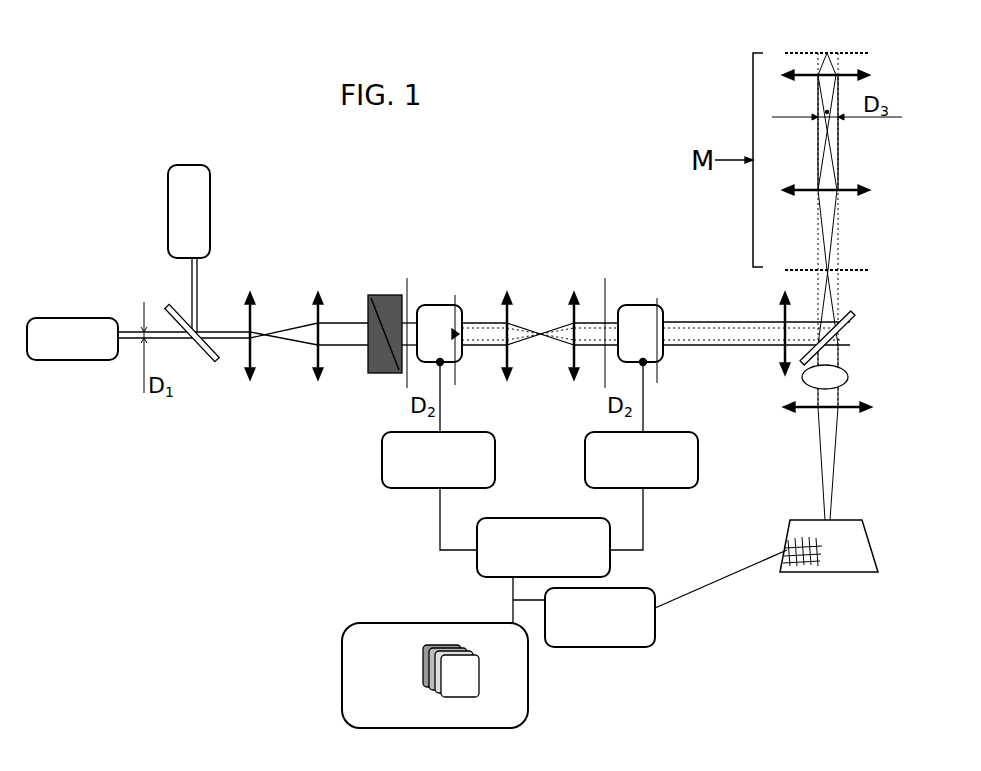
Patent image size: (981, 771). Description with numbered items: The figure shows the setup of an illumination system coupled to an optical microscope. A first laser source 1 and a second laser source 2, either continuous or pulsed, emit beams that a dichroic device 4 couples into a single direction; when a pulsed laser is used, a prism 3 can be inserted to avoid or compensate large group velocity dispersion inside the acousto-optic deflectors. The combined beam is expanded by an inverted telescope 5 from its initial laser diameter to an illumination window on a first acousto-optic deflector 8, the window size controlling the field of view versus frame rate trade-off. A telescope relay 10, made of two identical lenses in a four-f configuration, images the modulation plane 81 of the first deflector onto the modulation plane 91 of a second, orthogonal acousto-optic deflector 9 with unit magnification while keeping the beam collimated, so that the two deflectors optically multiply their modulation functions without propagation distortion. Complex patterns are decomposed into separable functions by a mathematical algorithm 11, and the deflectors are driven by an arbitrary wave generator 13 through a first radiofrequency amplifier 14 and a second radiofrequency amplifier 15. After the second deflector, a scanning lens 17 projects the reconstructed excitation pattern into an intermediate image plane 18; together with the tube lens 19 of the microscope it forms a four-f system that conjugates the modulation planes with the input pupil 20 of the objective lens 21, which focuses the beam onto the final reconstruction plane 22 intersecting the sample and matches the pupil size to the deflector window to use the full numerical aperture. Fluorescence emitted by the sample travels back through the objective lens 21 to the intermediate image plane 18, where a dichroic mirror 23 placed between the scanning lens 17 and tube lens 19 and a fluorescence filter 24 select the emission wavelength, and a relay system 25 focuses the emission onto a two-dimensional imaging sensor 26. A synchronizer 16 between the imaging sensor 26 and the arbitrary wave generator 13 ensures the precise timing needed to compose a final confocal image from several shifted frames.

The first laser source 1 is at (72, 339).
The second laser source 2 is at (189, 249).
The prism 3 is at (368, 373).
The dichroic device 4 is at (213, 363).
The inverted telescope 5 is at (243, 288).
The first acousto-optic deflector 8 is at (435, 305).
The second acousto-optic deflector 9 is at (635, 305).
The telescope relay 10 is at (501, 288).
The mathematical algorithm 11 is at (435, 675).
The arbitrary wave generator 13 is at (543, 570).
The first radiofrequency amplifier 14 is at (438, 455).
The second radiofrequency amplifier 15 is at (641, 455).
The synchronizer 16 is at (666, 598).
The scanning lens 17 is at (782, 315).
The intermediate image plane 18 is at (858, 268).
The tube lens 19 is at (845, 189).
The input pupil 20 is at (818, 112).
The objective lens 21 is at (850, 74).
The final reconstruction plane 22 is at (797, 52).
The dichroic mirror 23 is at (855, 316).
The fluorescence filter 24 is at (848, 377).
The relay system 25 is at (850, 411).
The two-dimensional imaging sensor 26 is at (829, 546).
The modulation plane of the first AOD 81 is at (455, 385).
The modulation plane of the second AOD 91 is at (657, 383).